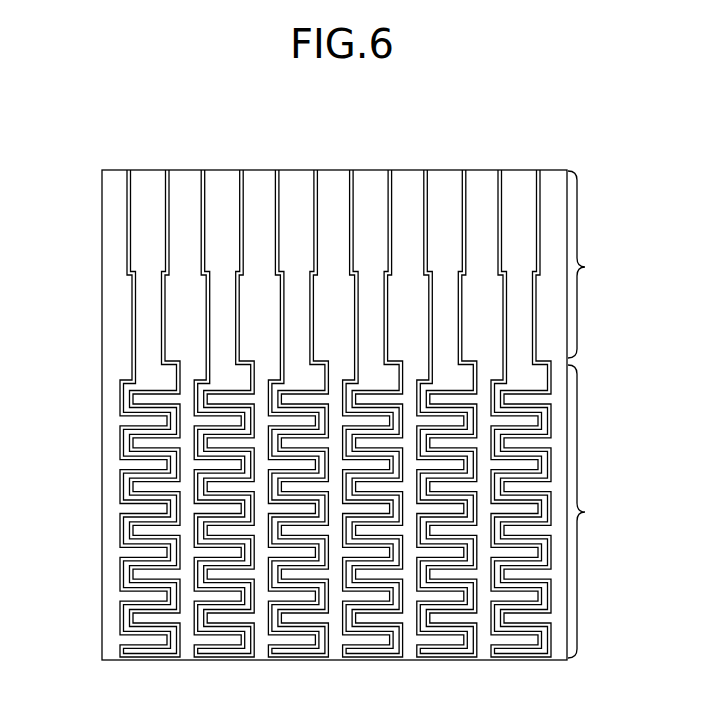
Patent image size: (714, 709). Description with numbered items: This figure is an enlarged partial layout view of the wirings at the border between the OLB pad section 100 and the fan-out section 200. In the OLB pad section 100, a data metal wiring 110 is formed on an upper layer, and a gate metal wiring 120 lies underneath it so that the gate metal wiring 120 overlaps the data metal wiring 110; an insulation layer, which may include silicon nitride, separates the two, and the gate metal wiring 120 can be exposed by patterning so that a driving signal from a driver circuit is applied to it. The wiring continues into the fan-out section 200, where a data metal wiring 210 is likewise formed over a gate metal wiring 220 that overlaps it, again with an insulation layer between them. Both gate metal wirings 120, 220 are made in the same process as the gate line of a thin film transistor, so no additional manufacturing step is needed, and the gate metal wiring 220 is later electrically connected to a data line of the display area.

The OLB pad section 100 is at (599, 264).
The data metal wiring 110 is at (247, 188).
The gate metal wiring 120 is at (220, 178).
The fan-out section 200 is at (599, 511).
The data metal wiring 210 is at (128, 577).
The gate metal wiring 220 is at (123, 590).